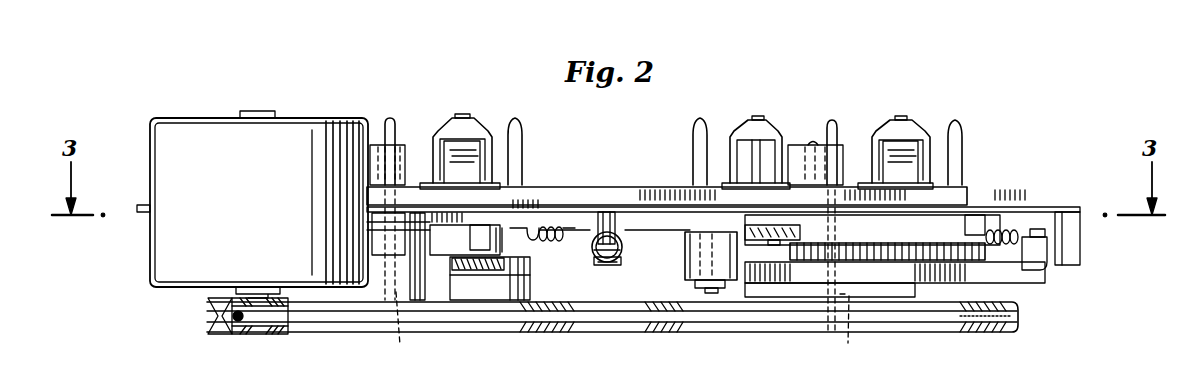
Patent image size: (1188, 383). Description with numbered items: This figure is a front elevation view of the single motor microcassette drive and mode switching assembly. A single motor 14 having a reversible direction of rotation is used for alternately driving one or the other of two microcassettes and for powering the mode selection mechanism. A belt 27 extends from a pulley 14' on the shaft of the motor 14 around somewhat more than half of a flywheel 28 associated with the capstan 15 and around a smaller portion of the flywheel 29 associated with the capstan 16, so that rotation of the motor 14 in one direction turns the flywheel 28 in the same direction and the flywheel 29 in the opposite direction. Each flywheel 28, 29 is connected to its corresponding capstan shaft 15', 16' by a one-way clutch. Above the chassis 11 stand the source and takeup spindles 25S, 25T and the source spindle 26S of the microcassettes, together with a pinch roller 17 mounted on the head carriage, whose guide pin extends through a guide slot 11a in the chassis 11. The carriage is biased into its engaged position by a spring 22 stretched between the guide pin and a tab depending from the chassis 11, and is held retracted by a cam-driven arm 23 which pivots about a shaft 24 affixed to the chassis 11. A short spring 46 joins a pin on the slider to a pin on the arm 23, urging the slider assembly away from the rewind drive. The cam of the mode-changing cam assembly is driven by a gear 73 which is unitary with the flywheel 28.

The single motor 14 is at (252, 204).
The pulley 14' is at (238, 327).
The capstan 16 is at (387, 197).
The capstan shaft 16' is at (414, 326).
The source spindle 26S is at (482, 126).
The chassis 11 is at (652, 210).
The guide slot 11a is at (603, 262).
The takeup spindle 25T is at (772, 126).
The pinch roller 17 is at (800, 147).
The capstan 15 is at (847, 217).
The capstan shaft 15' is at (862, 325).
The source spindle 25S is at (918, 126).
The short spring 46 is at (536, 242).
The spring 22 is at (623, 248).
The cam-driven arm 23 is at (696, 259).
The shaft 24 is at (725, 273).
The gear 73 is at (790, 256).
The belt 27 is at (600, 326).
The flywheel 28 is at (922, 335).
The flywheel 29 is at (462, 328).